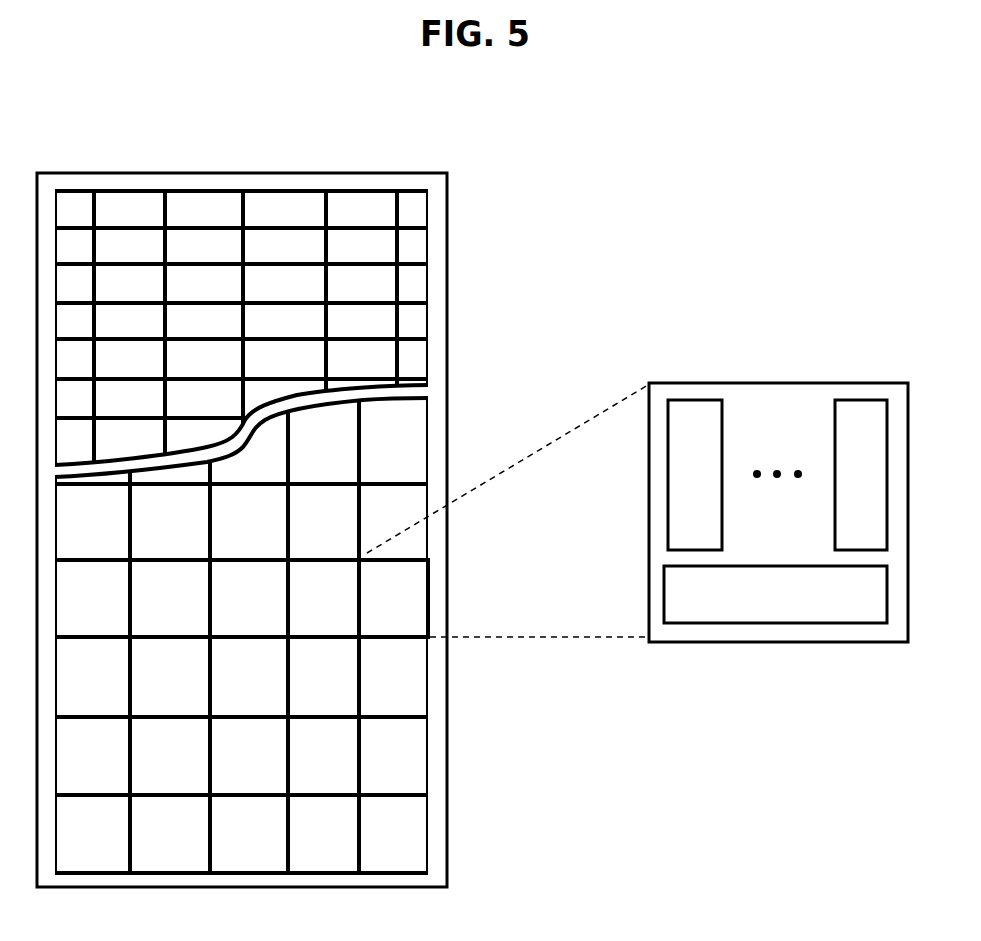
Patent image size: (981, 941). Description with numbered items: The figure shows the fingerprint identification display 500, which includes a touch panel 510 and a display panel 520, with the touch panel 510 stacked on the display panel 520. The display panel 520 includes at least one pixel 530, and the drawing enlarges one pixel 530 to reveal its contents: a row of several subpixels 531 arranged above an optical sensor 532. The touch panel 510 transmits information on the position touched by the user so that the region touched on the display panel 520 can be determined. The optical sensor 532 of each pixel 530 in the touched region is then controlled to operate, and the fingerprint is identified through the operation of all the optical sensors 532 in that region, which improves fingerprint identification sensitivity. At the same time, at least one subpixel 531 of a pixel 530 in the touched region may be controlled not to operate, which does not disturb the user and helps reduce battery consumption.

The fingerprint identification display 500 is at (447, 330).
The touch panel 510 is at (429, 283).
The display panel 520 is at (429, 740).
The pixel 530 is at (417, 613).
The subpixel 531 is at (695, 400).
The optical sensor 532 is at (744, 621).